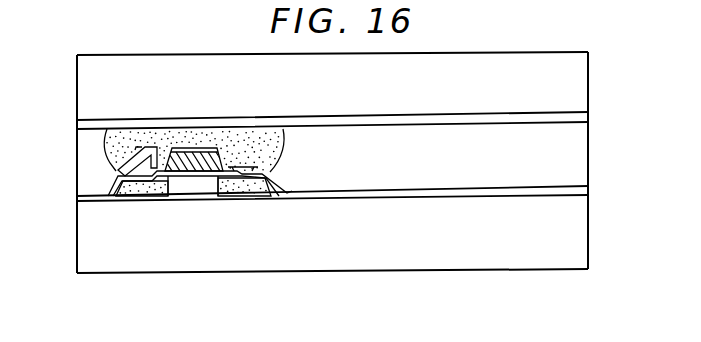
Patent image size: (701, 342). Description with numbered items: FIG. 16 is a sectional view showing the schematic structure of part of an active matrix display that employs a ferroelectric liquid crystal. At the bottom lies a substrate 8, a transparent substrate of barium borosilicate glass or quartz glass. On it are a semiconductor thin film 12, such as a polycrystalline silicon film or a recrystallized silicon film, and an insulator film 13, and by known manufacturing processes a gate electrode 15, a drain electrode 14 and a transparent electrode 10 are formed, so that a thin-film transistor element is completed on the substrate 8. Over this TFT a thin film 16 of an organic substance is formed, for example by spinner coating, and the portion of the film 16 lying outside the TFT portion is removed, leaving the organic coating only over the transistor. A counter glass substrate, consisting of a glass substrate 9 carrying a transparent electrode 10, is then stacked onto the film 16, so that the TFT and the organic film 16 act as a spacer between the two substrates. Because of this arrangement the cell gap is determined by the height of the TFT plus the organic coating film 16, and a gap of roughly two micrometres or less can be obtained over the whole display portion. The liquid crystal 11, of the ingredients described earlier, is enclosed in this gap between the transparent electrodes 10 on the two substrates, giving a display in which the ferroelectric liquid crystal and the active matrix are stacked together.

The substrate 8 is at (582, 238).
The glass substrate 9 is at (577, 88).
The transparent electrode 10 is at (583, 118).
The liquid crystal 11 is at (578, 173).
The semiconductor thin film 12 is at (130, 193).
The insulator film 13 is at (115, 195).
The drain electrode 14 is at (130, 164).
The gate electrode 15 is at (187, 176).
The thin film 16 is at (108, 139).